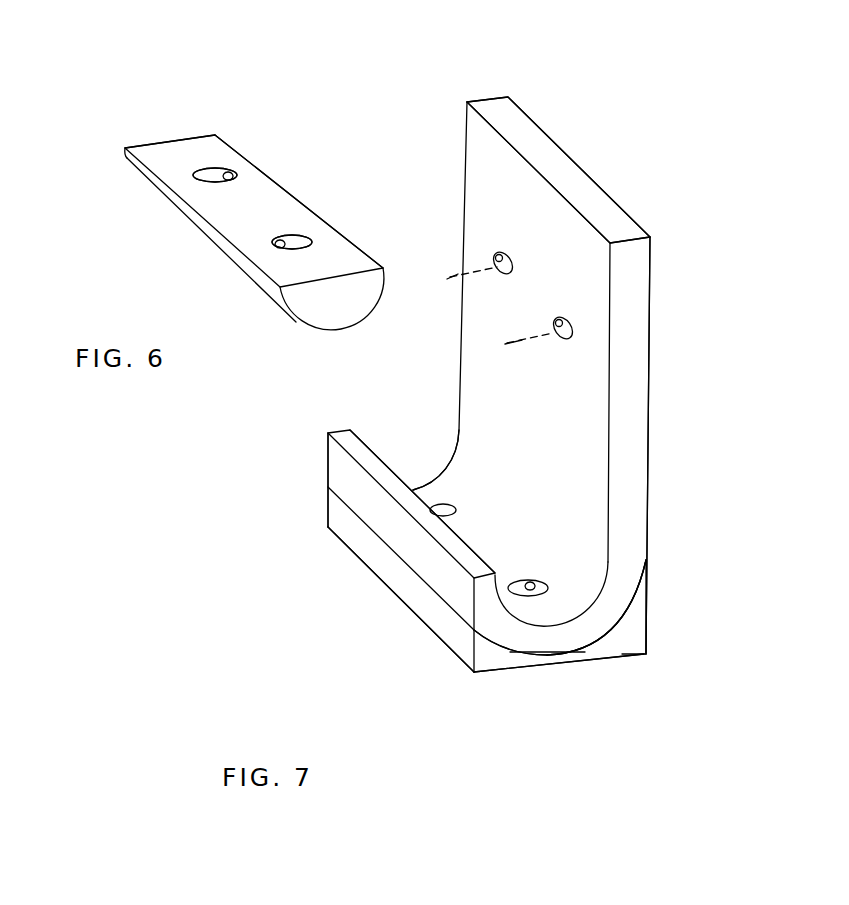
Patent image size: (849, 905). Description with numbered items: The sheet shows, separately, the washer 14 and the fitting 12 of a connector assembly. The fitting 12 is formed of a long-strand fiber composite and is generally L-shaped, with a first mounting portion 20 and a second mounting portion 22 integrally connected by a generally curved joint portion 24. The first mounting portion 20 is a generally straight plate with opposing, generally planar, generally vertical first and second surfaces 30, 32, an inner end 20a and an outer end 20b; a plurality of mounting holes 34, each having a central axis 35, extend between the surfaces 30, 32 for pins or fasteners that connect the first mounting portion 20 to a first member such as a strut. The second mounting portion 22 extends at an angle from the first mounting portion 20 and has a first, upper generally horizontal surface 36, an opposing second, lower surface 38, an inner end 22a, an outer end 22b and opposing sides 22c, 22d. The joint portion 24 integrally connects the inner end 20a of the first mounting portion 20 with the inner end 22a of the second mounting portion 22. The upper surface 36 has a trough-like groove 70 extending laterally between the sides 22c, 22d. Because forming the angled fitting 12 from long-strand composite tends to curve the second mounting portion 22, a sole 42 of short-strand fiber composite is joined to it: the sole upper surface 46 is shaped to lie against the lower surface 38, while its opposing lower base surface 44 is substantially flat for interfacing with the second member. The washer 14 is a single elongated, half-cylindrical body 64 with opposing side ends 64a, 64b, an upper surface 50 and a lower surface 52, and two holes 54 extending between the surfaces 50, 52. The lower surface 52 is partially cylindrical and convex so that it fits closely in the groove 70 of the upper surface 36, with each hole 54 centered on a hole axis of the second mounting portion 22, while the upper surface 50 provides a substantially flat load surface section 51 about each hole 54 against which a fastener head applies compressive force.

In FIG. 7, the fitting 12 is at (522, 418).
In FIG. 6, the washer 14 is at (234, 210).
In FIG. 7, the first mounting portion 20 is at (573, 375).
In FIG. 7, the inner end of first mounting portion 20a is at (628, 577).
In FIG. 7, the outer end of first mounting portion 20b is at (610, 220).
In FIG. 7, the second mounting portion 22 is at (485, 556).
In FIG. 7, the inner end of second mounting portion 22a is at (622, 608).
In FIG. 7, the outer end of second mounting portion 22b is at (378, 505).
In FIG. 7, the side of second mounting portion 22c is at (577, 637).
In FIG. 7, the side of second mounting portion 22d is at (412, 488).
In FIG. 7, the joint portion 24 is at (634, 597).
In FIG. 7, the first surface of first mounting portion 30 is at (508, 198).
In FIG. 7, the second surface of first mounting portion 32 is at (653, 318).
In FIG. 7, the mounting hole 34 is at (509, 260).
In FIG. 7, the central axis of mounting hole 35 is at (453, 276).
In FIG. 7, the upper surface of second mounting portion 36 is at (503, 560).
In FIG. 7, the lower surface of second mounting portion 38 is at (537, 657).
In FIG. 7, the sole 42 is at (425, 620).
In FIG. 7, the base surface of sole 44 is at (570, 663).
In FIG. 7, the upper surface of sole 46 is at (515, 644).
In FIG. 6, the washer upper surface 50 is at (288, 205).
In FIG. 6, the load surface section 51 is at (220, 157).
In FIG. 6, the washer lower surface 52 is at (365, 315).
In FIG. 6, the washer hole 54 is at (228, 172).
In FIG. 7, the washer hole 54 is at (442, 508).
In FIG. 6, the elongated half-cylindrical body 64 is at (160, 202).
In FIG. 6, the side end of washer body 64a is at (312, 307).
In FIG. 6, the side end of washer body 64b is at (152, 148).
In FIG. 7, the trough-like groove 70 is at (408, 452).